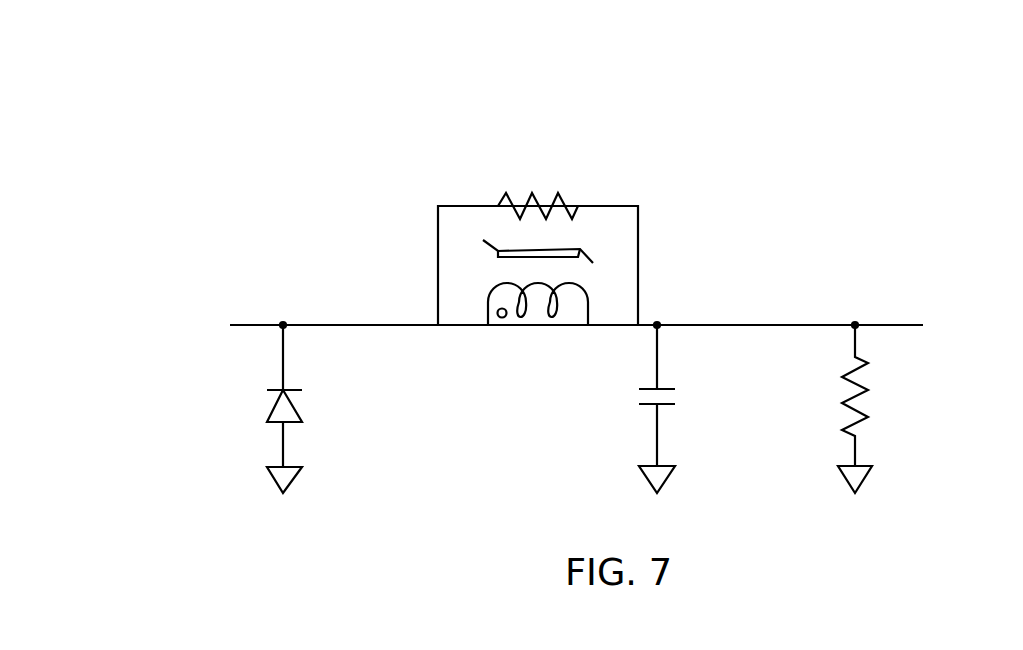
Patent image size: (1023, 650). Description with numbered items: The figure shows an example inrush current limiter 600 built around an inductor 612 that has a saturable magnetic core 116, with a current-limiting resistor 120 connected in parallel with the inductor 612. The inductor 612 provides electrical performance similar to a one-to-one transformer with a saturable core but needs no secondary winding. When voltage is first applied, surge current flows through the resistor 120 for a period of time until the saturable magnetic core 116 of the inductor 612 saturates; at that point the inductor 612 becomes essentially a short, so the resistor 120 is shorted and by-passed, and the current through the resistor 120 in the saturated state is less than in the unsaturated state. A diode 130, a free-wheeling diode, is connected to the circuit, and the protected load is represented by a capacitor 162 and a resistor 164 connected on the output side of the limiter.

The inrush current limiter 600 is at (270, 140).
The resistor 120 is at (570, 180).
The saturable magnetic core 116 is at (500, 263).
The inductor 612 is at (568, 335).
The diode 130 is at (250, 397).
The capacitor 162 is at (687, 395).
The resistor 164 is at (885, 395).